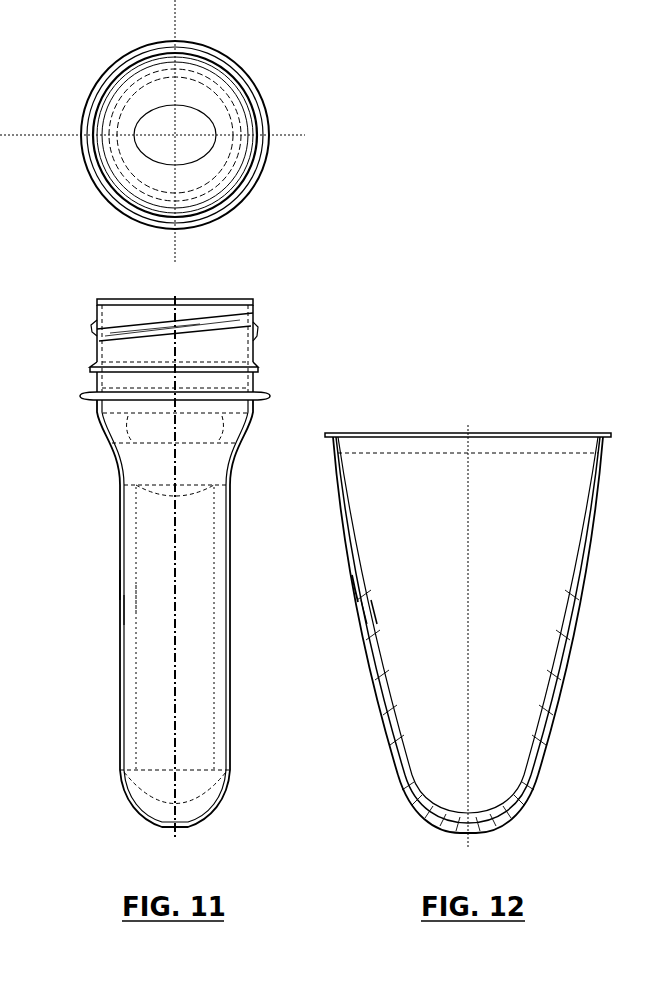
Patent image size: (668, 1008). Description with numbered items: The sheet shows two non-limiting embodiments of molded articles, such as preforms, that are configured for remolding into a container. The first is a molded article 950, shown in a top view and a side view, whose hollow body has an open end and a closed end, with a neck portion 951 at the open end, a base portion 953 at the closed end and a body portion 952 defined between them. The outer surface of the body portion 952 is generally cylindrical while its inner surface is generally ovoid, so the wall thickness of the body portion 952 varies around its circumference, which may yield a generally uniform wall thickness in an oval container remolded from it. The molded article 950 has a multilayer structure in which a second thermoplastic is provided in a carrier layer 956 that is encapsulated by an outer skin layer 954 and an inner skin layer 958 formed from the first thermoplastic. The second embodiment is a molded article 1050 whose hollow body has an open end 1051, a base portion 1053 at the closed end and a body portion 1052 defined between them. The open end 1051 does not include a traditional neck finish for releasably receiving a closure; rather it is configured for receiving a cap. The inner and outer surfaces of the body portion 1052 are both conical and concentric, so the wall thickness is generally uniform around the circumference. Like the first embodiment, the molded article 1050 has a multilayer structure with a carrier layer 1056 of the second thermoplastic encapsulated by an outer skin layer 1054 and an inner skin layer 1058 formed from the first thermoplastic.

In FIG. 11, the molded article 950 is at (157, 434).
In FIG. 11, the neck portion 951 is at (219, 340).
In FIG. 11, the body portion 952 is at (240, 509).
In FIG. 11, the base portion 953 is at (233, 808).
In FIG. 11, the outer skin layer 954 is at (120, 585).
In FIG. 11, the carrier layer 956 is at (120, 610).
In FIG. 11, the inner skin layer 958 is at (133, 596).
In FIG. 12, the molded article 1050 is at (459, 575).
In FIG. 12, the open end 1051 is at (583, 432).
In FIG. 12, the body portion 1052 is at (580, 668).
In FIG. 12, the base portion 1053 is at (541, 810).
In FIG. 12, the outer skin layer 1054 is at (357, 582).
In FIG. 12, the carrier layer 1056 is at (362, 607).
In FIG. 12, the inner skin layer 1058 is at (374, 590).